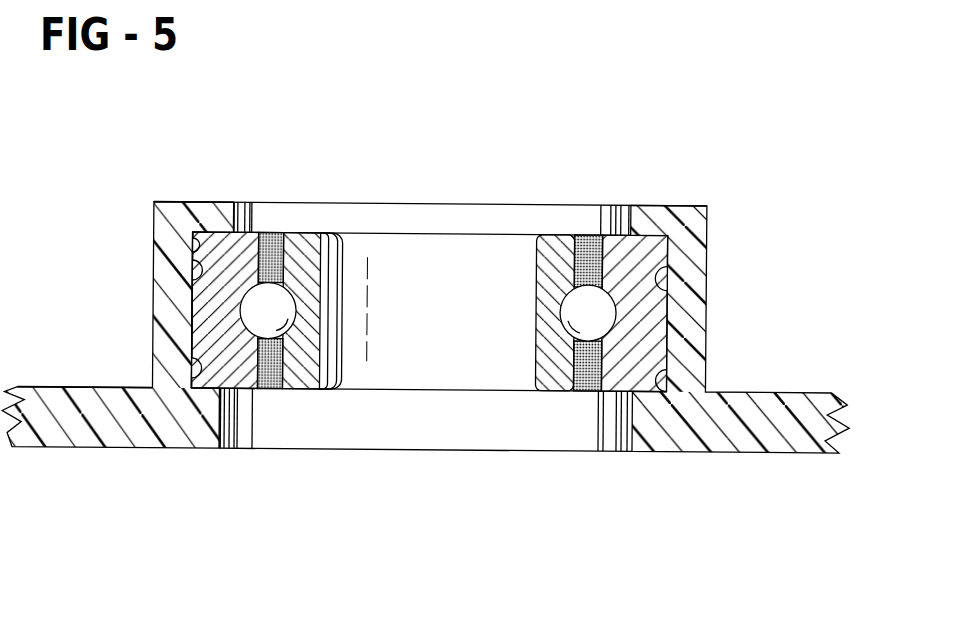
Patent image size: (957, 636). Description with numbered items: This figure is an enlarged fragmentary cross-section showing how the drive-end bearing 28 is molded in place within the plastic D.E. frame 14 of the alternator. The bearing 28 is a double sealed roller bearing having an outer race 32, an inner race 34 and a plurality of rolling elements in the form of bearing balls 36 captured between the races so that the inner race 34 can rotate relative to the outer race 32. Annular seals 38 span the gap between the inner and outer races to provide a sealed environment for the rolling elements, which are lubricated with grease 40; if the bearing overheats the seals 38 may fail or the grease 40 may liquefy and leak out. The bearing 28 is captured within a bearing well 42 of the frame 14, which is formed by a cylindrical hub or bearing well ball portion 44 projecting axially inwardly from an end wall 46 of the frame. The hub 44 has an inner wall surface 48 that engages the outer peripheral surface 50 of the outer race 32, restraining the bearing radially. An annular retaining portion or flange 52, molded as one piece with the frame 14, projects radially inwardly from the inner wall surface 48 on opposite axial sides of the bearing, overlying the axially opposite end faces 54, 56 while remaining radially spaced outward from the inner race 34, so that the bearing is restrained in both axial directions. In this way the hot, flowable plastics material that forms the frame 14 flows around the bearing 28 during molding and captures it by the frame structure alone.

The D.E. frame 14 is at (434, 319).
The D.E. bearing 28 is at (662, 339).
The outer race 32 is at (643, 249).
The inner race 34 is at (543, 357).
The bearing balls 36 is at (604, 309).
The annular seals 38 is at (591, 234).
The grease 40 is at (300, 391).
The bearing well 42 is at (439, 231).
The bearing well hub portion 44 is at (150, 248).
The end wall 46 is at (90, 390).
The inner wall surface 48 is at (153, 204).
The outer peripheral surface 50 is at (192, 322).
The annular retaining portion 52 is at (202, 204).
The end face 54 is at (242, 392).
The end face 56 is at (252, 234).